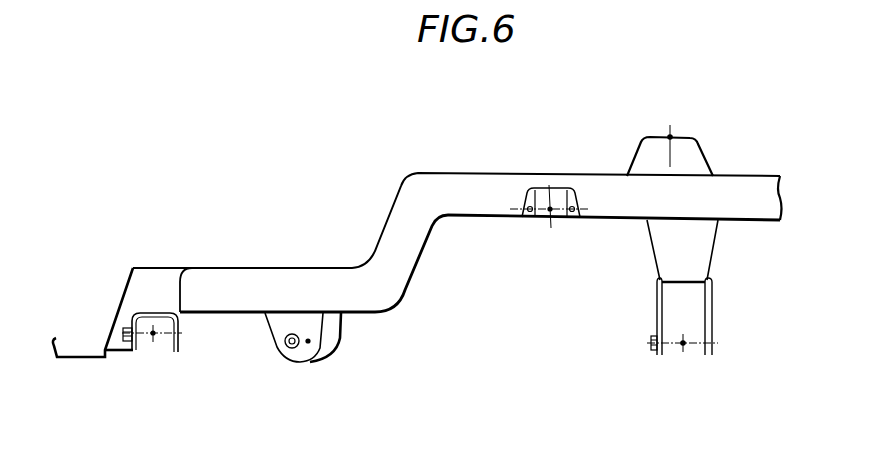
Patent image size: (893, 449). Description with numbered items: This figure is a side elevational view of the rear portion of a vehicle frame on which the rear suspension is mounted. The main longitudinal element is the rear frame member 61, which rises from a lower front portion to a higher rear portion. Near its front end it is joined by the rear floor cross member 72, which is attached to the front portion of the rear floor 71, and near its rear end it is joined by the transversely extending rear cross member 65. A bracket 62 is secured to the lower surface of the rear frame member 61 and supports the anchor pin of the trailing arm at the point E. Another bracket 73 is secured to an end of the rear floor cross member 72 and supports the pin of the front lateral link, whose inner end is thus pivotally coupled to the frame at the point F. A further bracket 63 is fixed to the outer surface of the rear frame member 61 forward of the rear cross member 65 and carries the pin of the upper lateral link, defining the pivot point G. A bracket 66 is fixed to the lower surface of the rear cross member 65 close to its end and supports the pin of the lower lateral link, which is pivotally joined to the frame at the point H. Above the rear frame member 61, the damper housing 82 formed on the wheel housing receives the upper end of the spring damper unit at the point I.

The rear frame member 61 is at (422, 182).
The bracket 62 is at (281, 330).
The bracket 63 is at (563, 188).
The rear cross member 65 is at (708, 248).
The bracket 66 is at (657, 310).
The rear floor 71 is at (88, 353).
The rear floor cross member 72 is at (180, 293).
The bracket 73 is at (178, 340).
The damper housing 82 is at (702, 140).
The point E is at (308, 344).
The point F is at (152, 337).
The point G is at (550, 207).
The point H is at (682, 347).
The point I is at (668, 136).